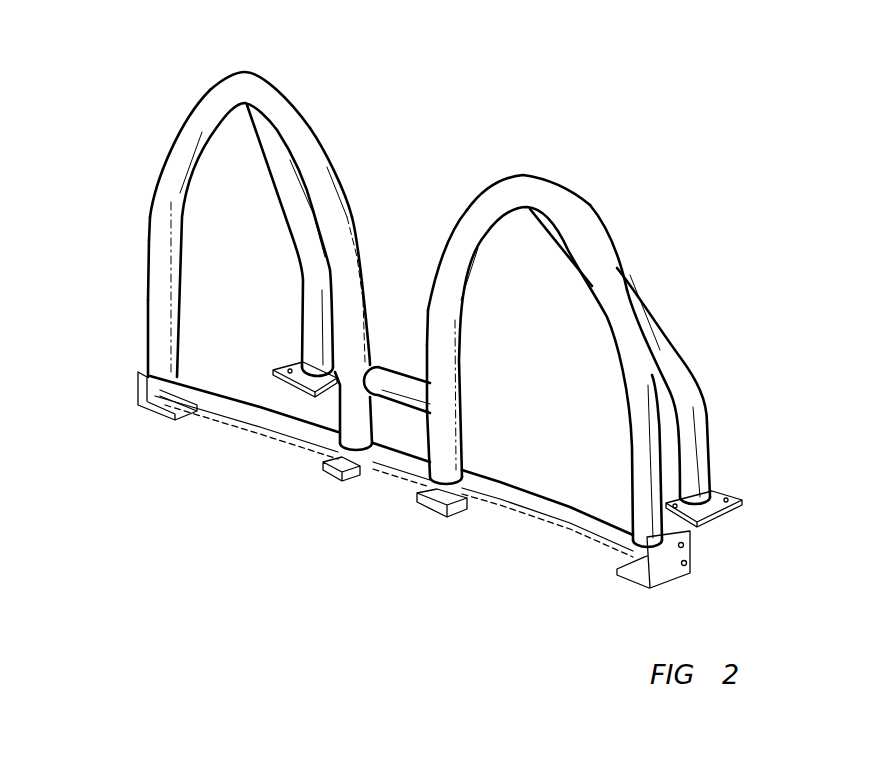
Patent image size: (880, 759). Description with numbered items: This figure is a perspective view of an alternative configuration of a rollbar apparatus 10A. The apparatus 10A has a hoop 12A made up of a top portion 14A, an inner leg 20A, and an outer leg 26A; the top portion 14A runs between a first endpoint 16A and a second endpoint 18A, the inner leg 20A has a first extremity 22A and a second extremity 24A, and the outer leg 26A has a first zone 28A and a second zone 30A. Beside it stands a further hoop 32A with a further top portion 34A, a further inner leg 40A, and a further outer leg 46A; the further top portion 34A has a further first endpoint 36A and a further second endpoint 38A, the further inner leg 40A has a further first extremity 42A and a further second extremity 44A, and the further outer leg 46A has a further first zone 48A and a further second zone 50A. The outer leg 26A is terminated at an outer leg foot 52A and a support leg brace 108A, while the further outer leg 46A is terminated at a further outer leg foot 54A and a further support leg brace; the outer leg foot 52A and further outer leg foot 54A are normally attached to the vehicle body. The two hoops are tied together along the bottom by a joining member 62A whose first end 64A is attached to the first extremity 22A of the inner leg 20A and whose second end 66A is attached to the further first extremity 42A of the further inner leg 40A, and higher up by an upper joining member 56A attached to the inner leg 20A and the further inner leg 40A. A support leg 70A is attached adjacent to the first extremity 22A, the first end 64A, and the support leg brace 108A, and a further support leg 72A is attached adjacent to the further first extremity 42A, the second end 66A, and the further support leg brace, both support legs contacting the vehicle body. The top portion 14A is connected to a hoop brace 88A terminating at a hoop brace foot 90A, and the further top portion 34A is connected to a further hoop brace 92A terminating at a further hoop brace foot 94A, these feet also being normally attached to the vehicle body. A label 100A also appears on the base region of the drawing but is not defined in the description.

The rollbar apparatus 10A is at (625, 238).
The hoop 12A is at (577, 220).
The top portion 14A is at (528, 185).
The first endpoint 16A is at (539, 301).
The second endpoint 18A is at (640, 363).
The inner leg 20A is at (452, 367).
The first extremity 22A is at (455, 452).
The second extremity 24A is at (452, 325).
The outer leg 26A is at (650, 443).
The first zone 28A is at (647, 493).
The second zone 30A is at (650, 402).
The further hoop 32A is at (290, 108).
The further top portion 34A is at (243, 84).
The further first endpoint 36A is at (333, 230).
The further second endpoint 38A is at (180, 150).
The further inner leg 40A is at (357, 327).
The further first extremity 42A is at (310, 443).
The further second extremity 44A is at (348, 280).
The further outer leg 46A is at (160, 250).
The further first zone 48A is at (160, 312).
The further second zone 50A is at (165, 196).
The outer leg foot 52A is at (662, 575).
The further outer leg foot 54A is at (143, 413).
The upper joining member 56A is at (420, 393).
The joining member 62A is at (403, 470).
The first end 64A is at (480, 497).
The second end 66A is at (300, 455).
The support leg 70A is at (433, 517).
The further support leg 72A is at (337, 477).
The hoop brace 88A is at (650, 327).
The hoop brace foot 90A is at (700, 521).
The further hoop brace 92A is at (290, 222).
The further hoop brace foot 94A is at (300, 368).
The base rail 100A is at (233, 415).
The support leg brace 108A is at (590, 530).